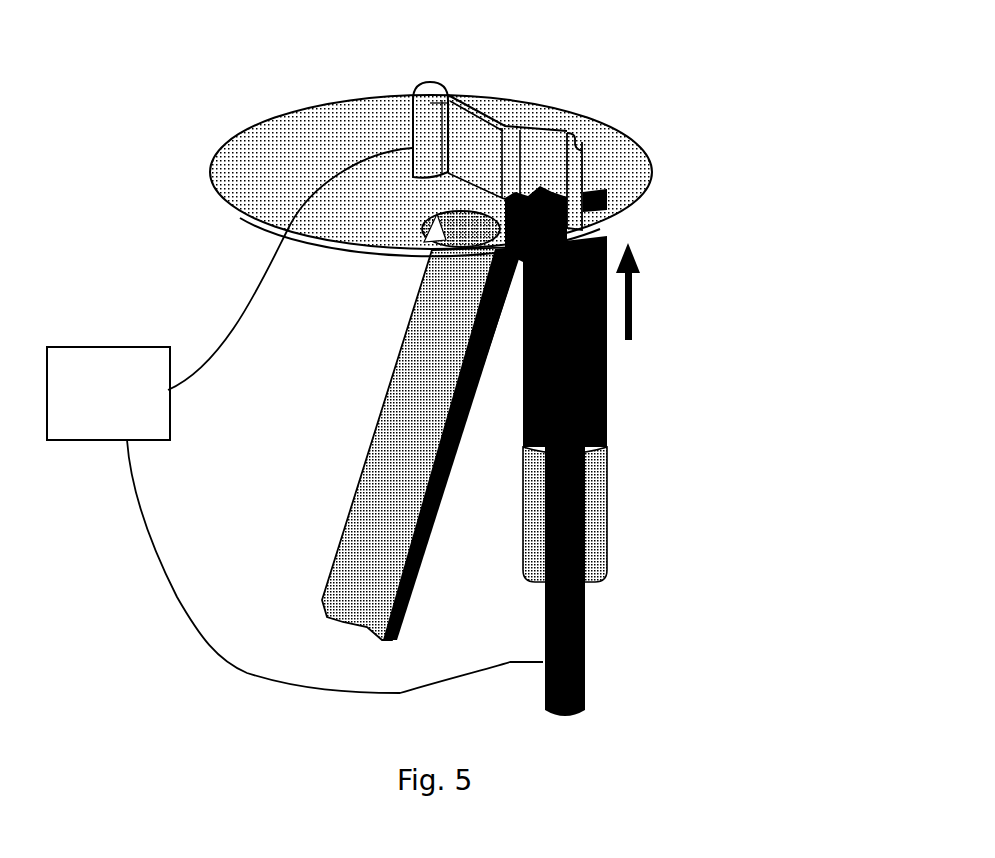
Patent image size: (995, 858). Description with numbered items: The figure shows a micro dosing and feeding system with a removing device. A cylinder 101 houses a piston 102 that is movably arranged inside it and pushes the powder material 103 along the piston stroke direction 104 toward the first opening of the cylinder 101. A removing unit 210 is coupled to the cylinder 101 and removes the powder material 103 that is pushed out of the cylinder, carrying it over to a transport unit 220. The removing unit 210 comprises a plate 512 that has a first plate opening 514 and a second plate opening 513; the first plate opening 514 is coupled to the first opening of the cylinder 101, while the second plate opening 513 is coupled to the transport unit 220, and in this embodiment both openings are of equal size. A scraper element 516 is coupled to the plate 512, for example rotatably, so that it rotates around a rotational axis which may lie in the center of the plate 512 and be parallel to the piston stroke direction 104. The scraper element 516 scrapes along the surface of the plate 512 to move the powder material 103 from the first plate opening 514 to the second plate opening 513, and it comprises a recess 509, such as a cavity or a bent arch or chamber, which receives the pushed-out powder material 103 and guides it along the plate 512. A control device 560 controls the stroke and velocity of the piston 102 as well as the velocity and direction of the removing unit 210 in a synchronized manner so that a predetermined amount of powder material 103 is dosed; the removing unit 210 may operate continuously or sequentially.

The cylinder 101 is at (607, 530).
The piston 102 is at (607, 445).
The powder material 103 is at (607, 392).
The piston stroke direction 104 is at (637, 305).
The removing unit 210 is at (480, 152).
The transport unit 220 is at (360, 470).
The recess 509 is at (553, 150).
The plate 512 is at (633, 155).
The second plate opening 513 is at (428, 232).
The first plate opening 514 is at (600, 198).
The scraper element 516 is at (575, 190).
The control device 560 is at (295, 420).